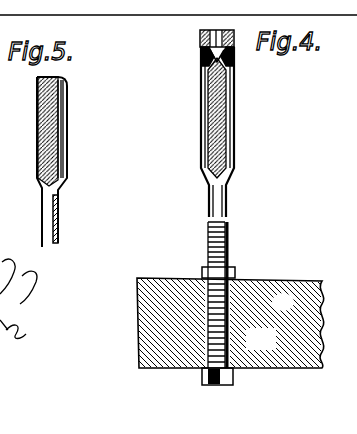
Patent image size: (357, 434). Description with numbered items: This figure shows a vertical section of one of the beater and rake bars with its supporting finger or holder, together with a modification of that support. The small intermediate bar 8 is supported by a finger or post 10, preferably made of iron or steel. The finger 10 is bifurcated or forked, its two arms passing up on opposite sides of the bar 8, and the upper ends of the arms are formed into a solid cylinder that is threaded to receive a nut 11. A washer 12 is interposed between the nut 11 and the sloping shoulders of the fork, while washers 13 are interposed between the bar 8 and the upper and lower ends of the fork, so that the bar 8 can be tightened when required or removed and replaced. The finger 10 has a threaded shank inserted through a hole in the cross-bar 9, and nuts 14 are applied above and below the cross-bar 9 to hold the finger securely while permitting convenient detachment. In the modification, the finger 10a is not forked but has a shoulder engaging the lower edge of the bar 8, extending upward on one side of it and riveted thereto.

In FIG. 5, the intermediate bar 8 is at (62, 130).
In FIG. 4, the intermediate bar 8 is at (212, 98).
In FIG. 4, the cross-bar 9 is at (230, 323).
In FIG. 4, the finger or post 10 is at (228, 228).
In FIG. 5, the finger 10a is at (59, 202).
In FIG. 4, the nut 11 is at (200, 37).
In FIG. 4, the washer 12 is at (203, 52).
In FIG. 4, the washer 13 is at (211, 62).
In FIG. 4, the nut 14 is at (229, 267).